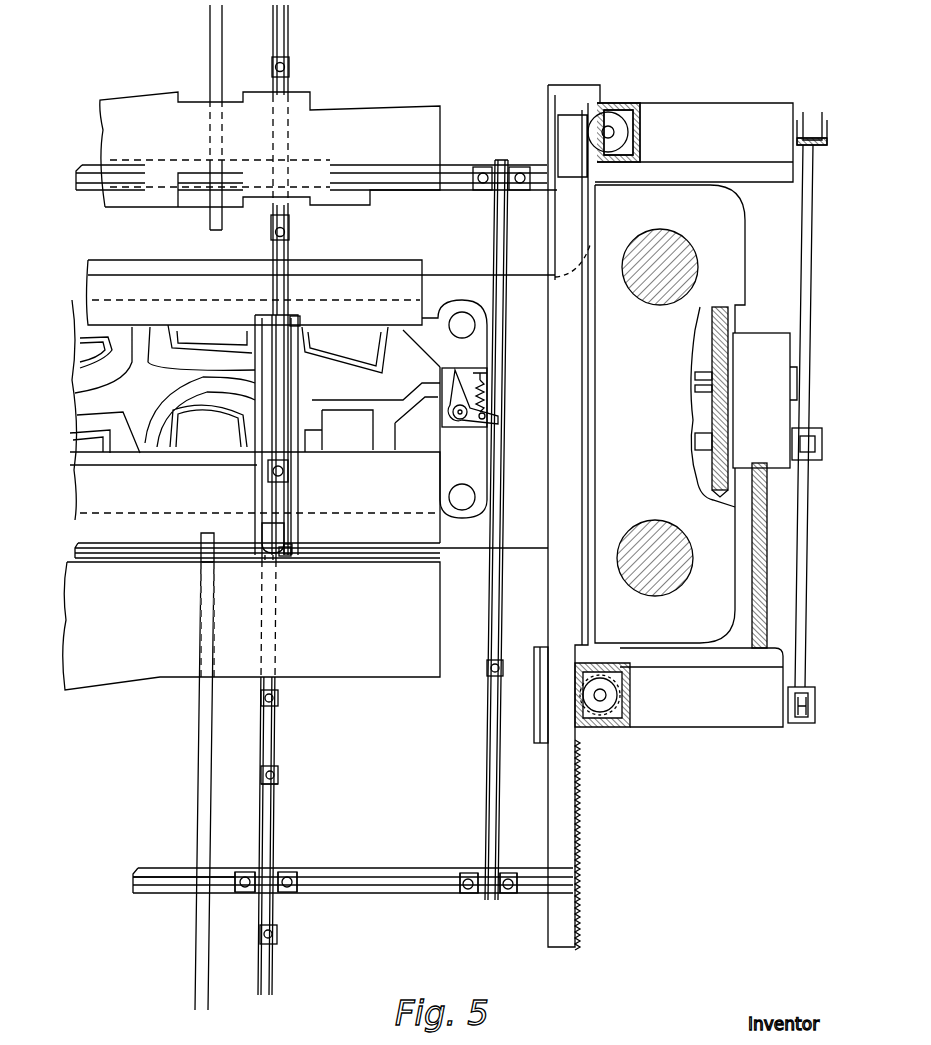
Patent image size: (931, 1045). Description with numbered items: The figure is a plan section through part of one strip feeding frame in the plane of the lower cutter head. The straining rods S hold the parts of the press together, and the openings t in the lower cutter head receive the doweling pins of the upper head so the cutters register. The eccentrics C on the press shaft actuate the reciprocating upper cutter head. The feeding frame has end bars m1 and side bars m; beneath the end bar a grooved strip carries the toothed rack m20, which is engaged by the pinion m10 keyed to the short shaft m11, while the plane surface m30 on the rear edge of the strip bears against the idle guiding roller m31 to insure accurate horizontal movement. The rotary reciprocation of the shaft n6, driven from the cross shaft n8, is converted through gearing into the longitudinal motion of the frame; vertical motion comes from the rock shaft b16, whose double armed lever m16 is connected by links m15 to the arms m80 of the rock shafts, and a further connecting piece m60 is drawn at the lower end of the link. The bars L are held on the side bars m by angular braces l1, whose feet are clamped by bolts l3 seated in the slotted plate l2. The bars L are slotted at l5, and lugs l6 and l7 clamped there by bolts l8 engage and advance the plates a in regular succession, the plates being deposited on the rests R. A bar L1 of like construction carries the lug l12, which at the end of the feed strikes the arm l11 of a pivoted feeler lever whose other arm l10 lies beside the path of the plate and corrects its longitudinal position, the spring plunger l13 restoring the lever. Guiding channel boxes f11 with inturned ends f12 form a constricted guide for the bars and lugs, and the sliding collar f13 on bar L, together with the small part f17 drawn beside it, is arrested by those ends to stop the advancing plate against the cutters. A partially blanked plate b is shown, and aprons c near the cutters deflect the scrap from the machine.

The rests or supports R is at (215, 49).
The bars L is at (288, 39).
The plate b is at (270, 149).
The aprons c is at (408, 262).
The eccentrics C is at (255, 497).
The plates a is at (251, 626).
The side bars m is at (460, 167).
The guiding channel boxes f11 is at (256, 485).
The inturned ends f12 is at (298, 317).
The collar f13 is at (300, 512).
The piece f17 is at (292, 548).
The openings t is at (462, 325).
The arm of elbow lever l10 is at (470, 385).
The arm of elbow lever l11 is at (464, 430).
The spring actuated plunger l13 is at (488, 416).
The end bars m1 is at (548, 825).
The toothed rack m20 is at (585, 762).
The pinion m10 is at (630, 708).
The short shaft m11 is at (605, 694).
The plane surface m30 is at (588, 155).
The idle guiding roller m31 is at (610, 122).
The straining rods S is at (680, 275).
The shaft n8 is at (700, 382).
The rock shaft b16 is at (700, 452).
The shaft n6 is at (760, 560).
The links m15 is at (806, 285).
The arms m80 is at (808, 112).
The double armed lever m16 is at (818, 456).
The bracket m60 is at (790, 724).
The bar L1 is at (484, 530).
The lug l12 is at (487, 668).
The slots l5 is at (270, 735).
The bolts l8 is at (272, 775).
The lugs l7 is at (263, 790).
The lugs l6 is at (262, 928).
The angular braces l1 is at (245, 872).
The clamping bolts l3 is at (287, 872).
The slotted plate l2 is at (432, 882).